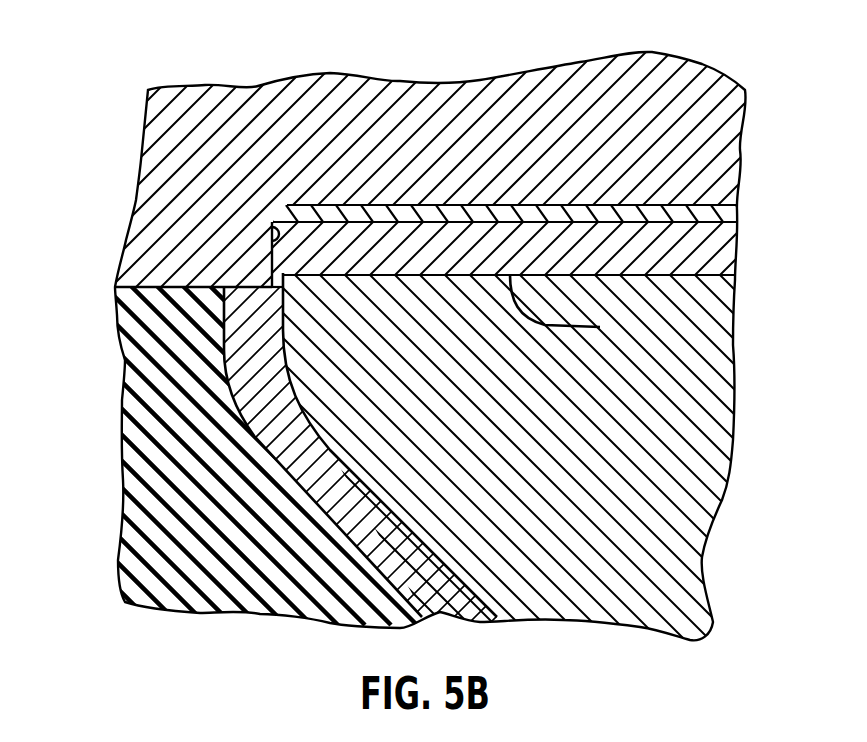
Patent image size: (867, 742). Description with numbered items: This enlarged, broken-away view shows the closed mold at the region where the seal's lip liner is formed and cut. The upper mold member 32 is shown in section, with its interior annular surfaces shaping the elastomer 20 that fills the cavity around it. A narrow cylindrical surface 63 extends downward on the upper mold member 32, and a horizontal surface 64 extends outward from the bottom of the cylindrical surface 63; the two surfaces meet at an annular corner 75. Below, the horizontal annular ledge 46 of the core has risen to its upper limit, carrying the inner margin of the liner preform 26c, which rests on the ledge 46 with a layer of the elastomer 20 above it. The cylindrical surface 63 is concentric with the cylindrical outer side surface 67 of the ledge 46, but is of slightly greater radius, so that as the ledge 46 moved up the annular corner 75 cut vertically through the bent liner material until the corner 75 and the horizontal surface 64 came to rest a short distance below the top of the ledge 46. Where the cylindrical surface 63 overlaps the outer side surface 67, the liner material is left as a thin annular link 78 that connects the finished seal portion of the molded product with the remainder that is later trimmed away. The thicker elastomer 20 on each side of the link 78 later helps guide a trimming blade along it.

The upper mold member 32 is at (388, 82).
The elastomer 20 is at (737, 214).
The inner margin of liner preform 26c is at (735, 257).
The horizontal annular ledge 46 is at (600, 327).
The cylindrical surface 63 is at (272, 241).
The annular corner 75 is at (266, 281).
The horizontal surface 64 is at (150, 288).
The annular link 78 is at (280, 289).
The cylindrical outer side surface 67 is at (283, 304).